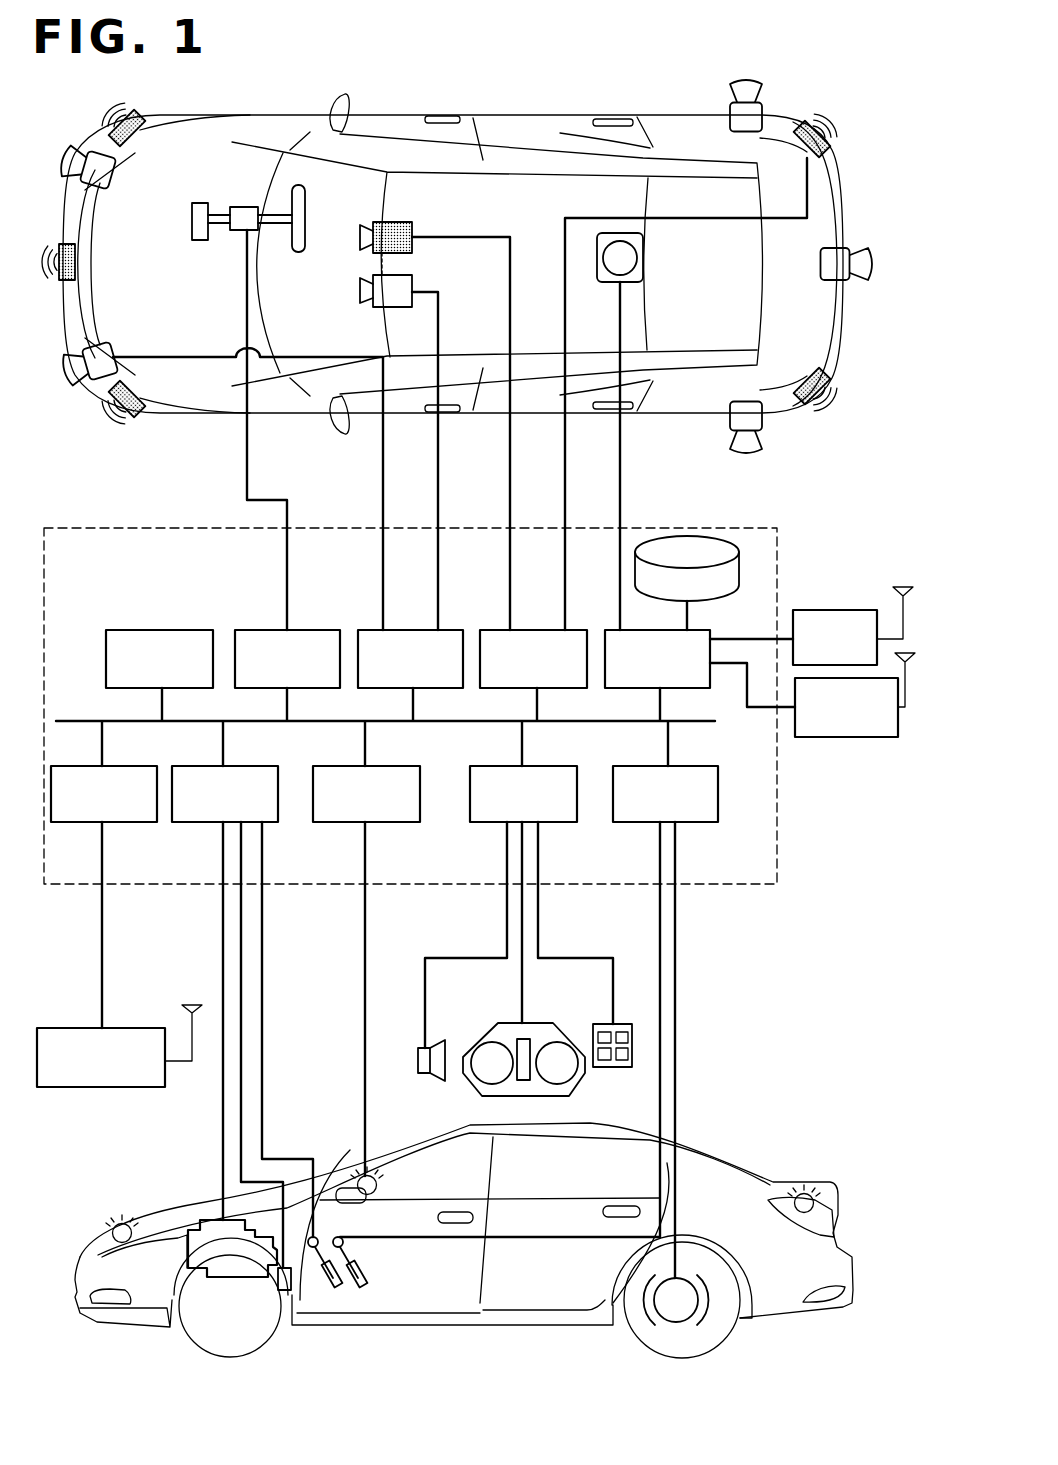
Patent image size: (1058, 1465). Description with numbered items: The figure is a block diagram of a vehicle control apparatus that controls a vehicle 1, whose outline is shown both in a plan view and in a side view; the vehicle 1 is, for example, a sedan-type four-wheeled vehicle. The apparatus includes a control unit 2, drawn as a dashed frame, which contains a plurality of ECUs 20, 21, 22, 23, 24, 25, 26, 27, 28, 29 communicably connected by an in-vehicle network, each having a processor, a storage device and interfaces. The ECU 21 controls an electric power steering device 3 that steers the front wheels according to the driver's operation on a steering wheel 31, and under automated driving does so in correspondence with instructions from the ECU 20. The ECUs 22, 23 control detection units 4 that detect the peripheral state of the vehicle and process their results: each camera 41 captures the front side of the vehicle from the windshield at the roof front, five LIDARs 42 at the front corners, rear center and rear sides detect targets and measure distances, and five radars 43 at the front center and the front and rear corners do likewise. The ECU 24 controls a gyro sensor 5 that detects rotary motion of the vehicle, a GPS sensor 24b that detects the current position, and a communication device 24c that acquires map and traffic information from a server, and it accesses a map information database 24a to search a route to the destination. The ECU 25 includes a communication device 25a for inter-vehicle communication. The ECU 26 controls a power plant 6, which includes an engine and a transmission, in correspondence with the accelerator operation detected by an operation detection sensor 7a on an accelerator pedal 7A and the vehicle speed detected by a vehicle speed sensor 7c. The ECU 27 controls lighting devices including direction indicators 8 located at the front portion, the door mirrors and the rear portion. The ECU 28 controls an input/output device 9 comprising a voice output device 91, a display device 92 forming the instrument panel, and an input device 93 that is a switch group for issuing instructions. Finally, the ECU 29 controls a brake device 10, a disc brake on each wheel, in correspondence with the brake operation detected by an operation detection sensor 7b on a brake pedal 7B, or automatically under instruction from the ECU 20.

The vehicle 1 is at (856, 172).
The control unit 2 is at (752, 888).
The electric power steering device 3 is at (200, 242).
The steering wheel 31 is at (300, 252).
The detection units 4 is at (88, 123).
The camera 41 is at (415, 250).
The LIDAR 42 is at (108, 190).
The millimeter wave radar 43 is at (141, 117).
The gyro sensor 5 is at (643, 258).
The power plant 6 is at (186, 1220).
The operation detection sensor 7a is at (318, 1205).
The operation detection sensor 7b is at (343, 1236).
The accelerator pedal 7A is at (345, 1282).
The brake pedal 7B is at (367, 1268).
The vehicle speed sensor 7c is at (285, 1292).
The direction indicators 8 is at (111, 1228).
The input/output device 9 is at (514, 1070).
The voice output device 91 is at (417, 1058).
The display device 92 is at (482, 1042).
The input device 93 is at (613, 1067).
The brake device 10 is at (680, 1323).
The ECU 20 is at (194, 628).
The ECU 21 is at (321, 628).
The ECU 22 is at (413, 628).
The ECU 23 is at (539, 628).
The ECU 24 is at (606, 628).
The map information database 24a is at (686, 534).
The GPS sensor 24b is at (848, 609).
The communication device 24c is at (847, 738).
The ECU 25 is at (133, 823).
The communication device 25a is at (105, 1088).
The ECU 26 is at (203, 823).
The ECU 27 is at (397, 823).
The ECU 28 is at (558, 823).
The ECU 29 is at (700, 823).